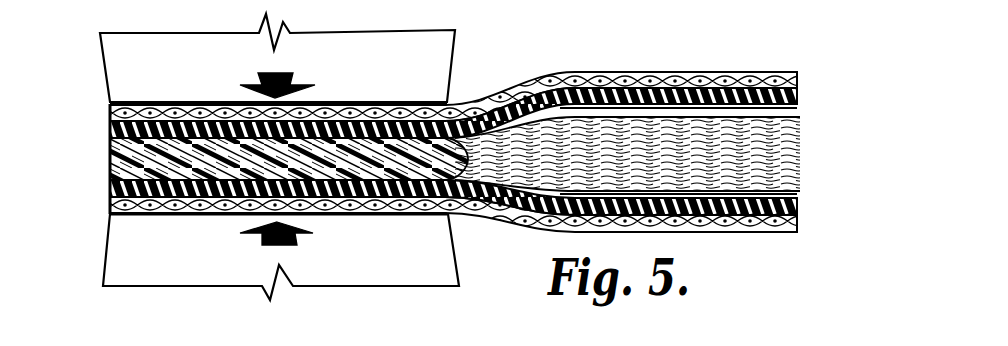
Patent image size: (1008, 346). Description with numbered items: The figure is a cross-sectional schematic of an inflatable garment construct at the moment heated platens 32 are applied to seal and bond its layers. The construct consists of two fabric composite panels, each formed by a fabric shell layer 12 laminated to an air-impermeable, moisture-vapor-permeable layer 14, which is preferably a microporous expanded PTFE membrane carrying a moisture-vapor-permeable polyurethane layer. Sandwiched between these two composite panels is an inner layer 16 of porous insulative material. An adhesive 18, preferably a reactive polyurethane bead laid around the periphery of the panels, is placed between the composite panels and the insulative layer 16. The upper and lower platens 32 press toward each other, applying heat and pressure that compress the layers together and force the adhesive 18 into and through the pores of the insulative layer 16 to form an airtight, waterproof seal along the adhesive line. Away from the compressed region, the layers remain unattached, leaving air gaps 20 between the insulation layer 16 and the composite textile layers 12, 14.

The fabric shell layer 12 is at (785, 68).
The air-impermeable, moisture-vapor-permeable layer 14 is at (793, 100).
The inner layer of porous insulative material 16 is at (803, 155).
The adhesive 18 is at (110, 152).
The air gap 20 is at (793, 108).
The platen 32 is at (430, 63).